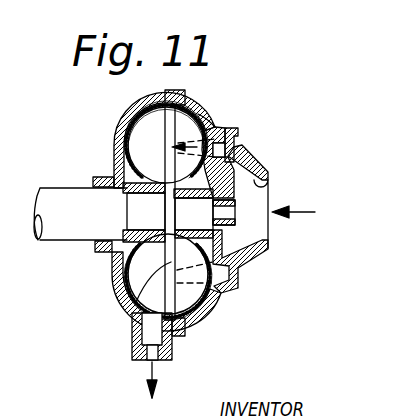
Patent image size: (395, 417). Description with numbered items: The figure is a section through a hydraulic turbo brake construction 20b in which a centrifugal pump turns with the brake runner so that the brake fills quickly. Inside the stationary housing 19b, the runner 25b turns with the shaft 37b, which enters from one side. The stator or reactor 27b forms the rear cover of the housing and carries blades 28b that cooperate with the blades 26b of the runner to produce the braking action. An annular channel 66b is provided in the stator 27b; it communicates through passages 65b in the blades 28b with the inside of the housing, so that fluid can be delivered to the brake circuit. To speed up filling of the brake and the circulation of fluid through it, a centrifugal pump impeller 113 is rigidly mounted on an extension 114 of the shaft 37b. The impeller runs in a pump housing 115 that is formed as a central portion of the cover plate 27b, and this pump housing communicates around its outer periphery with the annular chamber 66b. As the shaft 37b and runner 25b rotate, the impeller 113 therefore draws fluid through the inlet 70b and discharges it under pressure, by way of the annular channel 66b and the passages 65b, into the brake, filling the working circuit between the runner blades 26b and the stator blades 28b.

The stationary housing 19b is at (150, 108).
The brake construction 20b is at (137, 306).
The runner 25b is at (127, 139).
The blades of the runner 26b is at (143, 164).
The stator or reactor 27b is at (187, 98).
The blades 28b is at (200, 314).
The shaft 37b is at (57, 180).
The passages 65b is at (210, 133).
The annular channel 66b is at (236, 146).
The inlet 70b is at (270, 198).
The centrifugal pump impeller 113 is at (240, 258).
The extension of the shaft 114 is at (231, 213).
The pump housing 115 is at (239, 164).